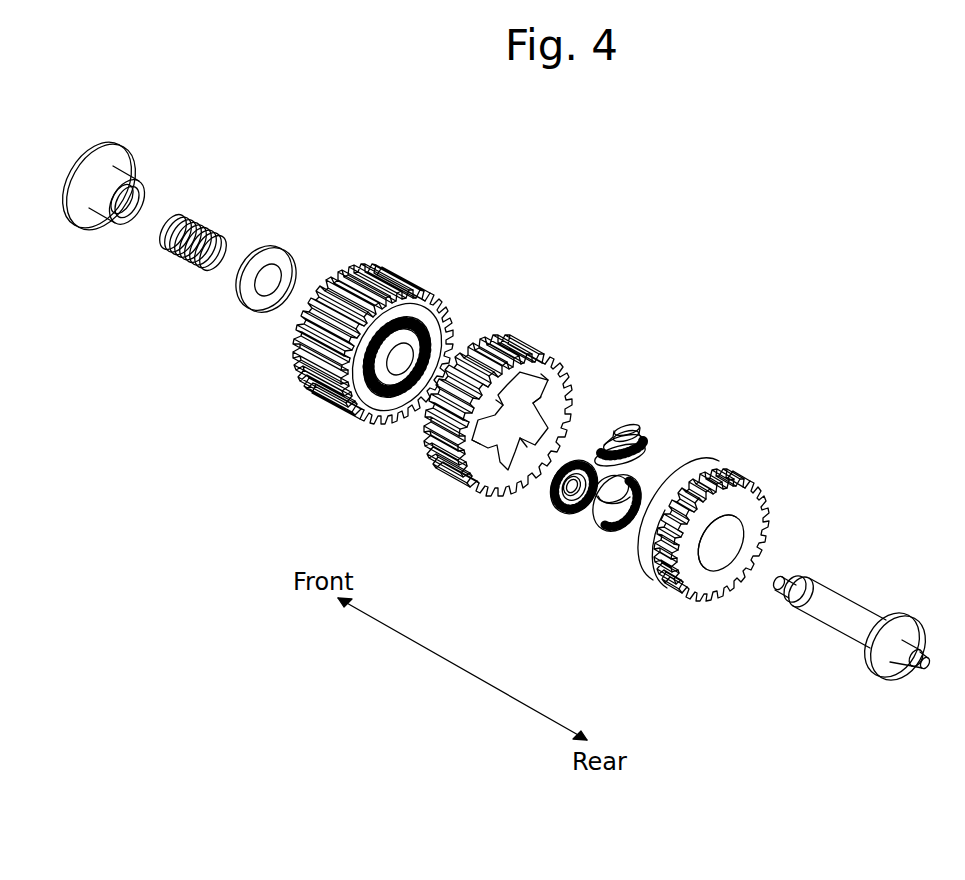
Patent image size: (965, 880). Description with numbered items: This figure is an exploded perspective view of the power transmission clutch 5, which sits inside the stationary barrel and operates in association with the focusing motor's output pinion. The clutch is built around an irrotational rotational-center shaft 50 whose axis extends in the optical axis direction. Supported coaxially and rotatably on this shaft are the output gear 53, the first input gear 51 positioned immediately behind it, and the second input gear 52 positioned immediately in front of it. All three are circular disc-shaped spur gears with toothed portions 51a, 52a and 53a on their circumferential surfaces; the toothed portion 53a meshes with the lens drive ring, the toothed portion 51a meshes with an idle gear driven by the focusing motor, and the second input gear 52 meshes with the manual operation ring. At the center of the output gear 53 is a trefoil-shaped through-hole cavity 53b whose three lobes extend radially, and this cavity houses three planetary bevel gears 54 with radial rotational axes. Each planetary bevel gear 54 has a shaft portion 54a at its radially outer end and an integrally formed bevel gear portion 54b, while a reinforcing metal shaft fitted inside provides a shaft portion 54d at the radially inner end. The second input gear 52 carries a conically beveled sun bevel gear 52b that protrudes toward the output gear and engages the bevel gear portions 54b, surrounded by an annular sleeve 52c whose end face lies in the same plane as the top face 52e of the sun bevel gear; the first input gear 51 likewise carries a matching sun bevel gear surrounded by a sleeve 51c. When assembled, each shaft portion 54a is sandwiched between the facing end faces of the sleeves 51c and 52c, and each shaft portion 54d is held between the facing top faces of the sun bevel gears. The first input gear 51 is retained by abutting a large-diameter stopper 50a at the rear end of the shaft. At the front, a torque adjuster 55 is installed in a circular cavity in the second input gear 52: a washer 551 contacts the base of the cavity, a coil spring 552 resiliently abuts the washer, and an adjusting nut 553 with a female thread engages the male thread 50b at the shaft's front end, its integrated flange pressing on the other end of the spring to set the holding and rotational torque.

The power transmission clutch 5 is at (678, 297).
The torque adjuster 55 is at (326, 231).
The adjusting nut 553 is at (90, 221).
The coil spring 552 is at (178, 257).
The washer 551 is at (243, 302).
The second input gear 52 is at (395, 258).
The toothed portion 52a is at (432, 274).
The sun bevel gear 52b is at (387, 397).
The sleeve 52c is at (437, 322).
The top face 52e is at (392, 372).
The output gear 53 is at (560, 348).
The toothed portion 53a is at (525, 340).
The through-hole cavity 53b is at (538, 398).
The planetary bevel gear 54 is at (648, 418).
The shaft portion 54a is at (635, 432).
The bevel gear portion 54b is at (602, 425).
The shaft portion 54d is at (627, 468).
The first input gear 51 is at (740, 482).
The toothed portion 51a is at (758, 498).
The sleeve 51c is at (653, 573).
The rotational-center shaft 50 is at (850, 607).
The large-diameter stopper 50a is at (907, 620).
The male thread 50b is at (797, 580).